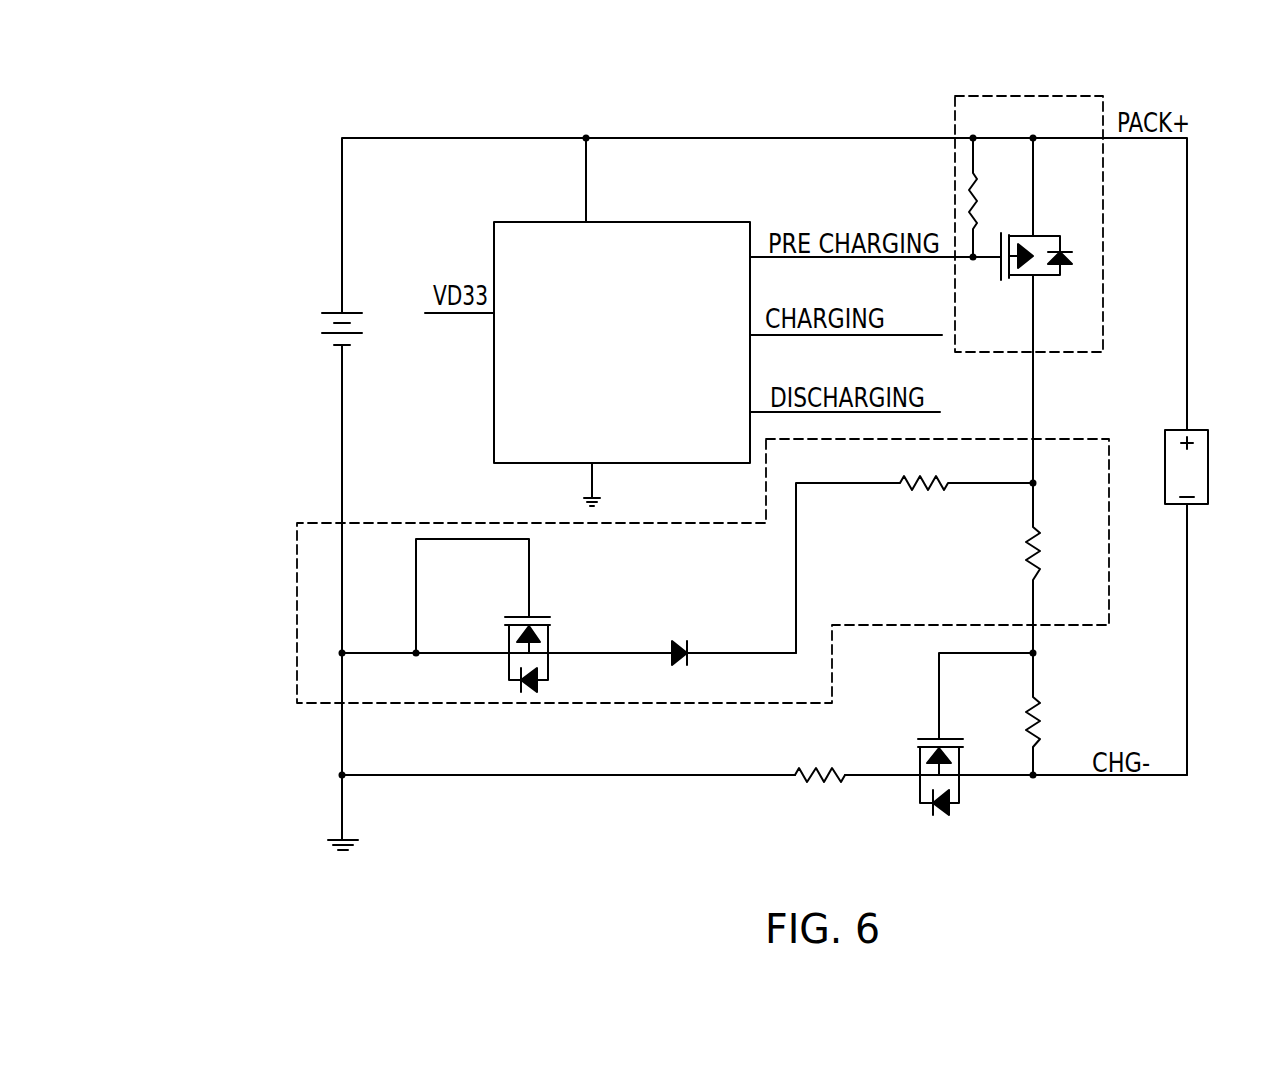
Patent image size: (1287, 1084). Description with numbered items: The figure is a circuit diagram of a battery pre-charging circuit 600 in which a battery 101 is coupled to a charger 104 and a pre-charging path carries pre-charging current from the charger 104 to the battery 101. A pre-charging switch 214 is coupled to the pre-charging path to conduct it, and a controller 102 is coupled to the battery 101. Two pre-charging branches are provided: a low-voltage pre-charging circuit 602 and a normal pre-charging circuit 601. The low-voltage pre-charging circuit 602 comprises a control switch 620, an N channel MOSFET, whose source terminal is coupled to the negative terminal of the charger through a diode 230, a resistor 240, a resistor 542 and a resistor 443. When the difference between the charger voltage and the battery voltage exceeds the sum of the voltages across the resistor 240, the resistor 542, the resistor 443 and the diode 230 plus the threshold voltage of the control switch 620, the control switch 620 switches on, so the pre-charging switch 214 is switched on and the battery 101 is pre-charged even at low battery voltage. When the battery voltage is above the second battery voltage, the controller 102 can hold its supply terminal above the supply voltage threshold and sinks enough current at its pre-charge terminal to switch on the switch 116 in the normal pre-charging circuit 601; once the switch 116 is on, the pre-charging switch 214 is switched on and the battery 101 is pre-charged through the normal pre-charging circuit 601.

The battery pre-charging circuit 600 is at (214, 115).
The battery 101 is at (350, 313).
The controller 102 is at (670, 222).
The charger 104 is at (1196, 430).
The switch 116 is at (1042, 234).
The normal pre-charging circuit 601 is at (1103, 184).
The low-voltage pre-charging circuit 602 is at (524, 704).
The resistor 240 is at (915, 478).
The resistor 542 is at (1038, 543).
The resistor 443 is at (1037, 708).
The control switch 620 is at (543, 617).
The diode 230 is at (676, 641).
The pre-charging switch 214 is at (943, 737).